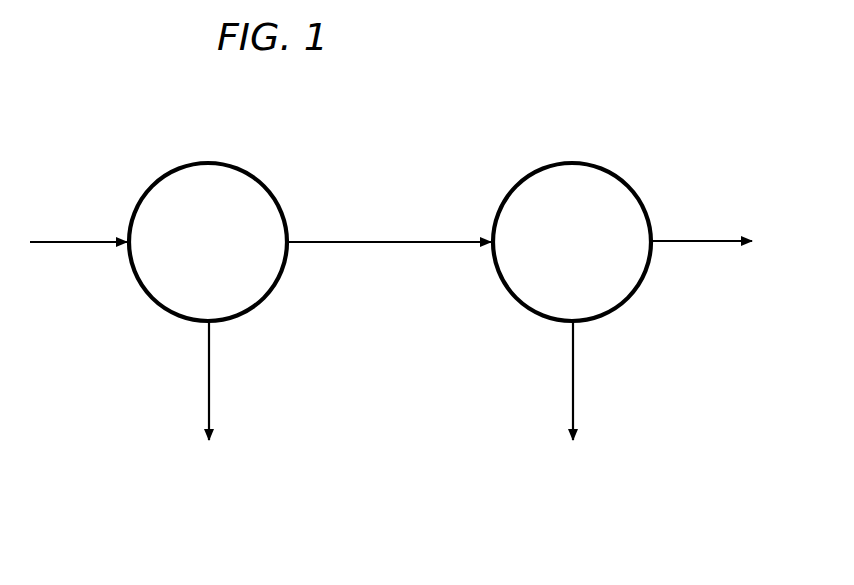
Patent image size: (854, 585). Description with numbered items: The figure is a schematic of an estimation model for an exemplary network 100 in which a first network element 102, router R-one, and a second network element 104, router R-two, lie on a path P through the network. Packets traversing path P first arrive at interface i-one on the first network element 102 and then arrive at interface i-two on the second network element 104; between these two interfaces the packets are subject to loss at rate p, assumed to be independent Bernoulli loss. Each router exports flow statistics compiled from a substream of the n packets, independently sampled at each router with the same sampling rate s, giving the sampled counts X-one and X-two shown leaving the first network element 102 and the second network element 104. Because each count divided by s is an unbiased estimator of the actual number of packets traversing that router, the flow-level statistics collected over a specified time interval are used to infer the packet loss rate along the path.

The two-node reaction diagram 100 is at (423, 89).
The first network element 102 is at (166, 168).
The second network element 104 is at (571, 163).